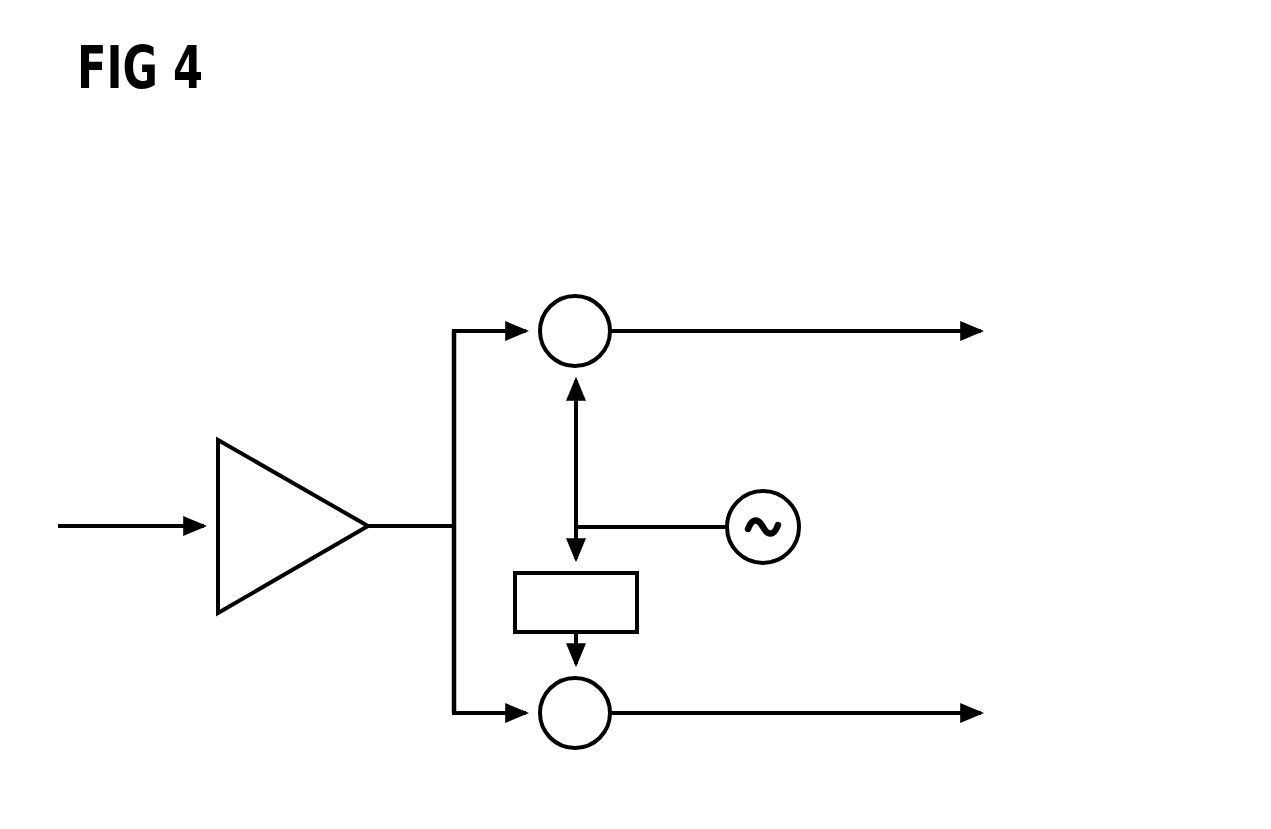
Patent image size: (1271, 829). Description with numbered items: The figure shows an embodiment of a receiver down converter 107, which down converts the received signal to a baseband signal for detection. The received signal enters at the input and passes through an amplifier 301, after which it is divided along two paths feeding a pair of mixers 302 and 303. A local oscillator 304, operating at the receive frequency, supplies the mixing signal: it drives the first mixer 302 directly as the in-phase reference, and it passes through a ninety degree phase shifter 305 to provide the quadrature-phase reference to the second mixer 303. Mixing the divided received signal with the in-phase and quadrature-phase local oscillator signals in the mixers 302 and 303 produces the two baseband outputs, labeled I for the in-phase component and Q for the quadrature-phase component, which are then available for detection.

The receiver down converter 107 is at (652, 433).
The amplifier 301 is at (257, 457).
The mixer 302 is at (573, 295).
The mixer 303 is at (552, 743).
The local oscillator 304 is at (782, 487).
The 90 degree phase shifter 305 is at (637, 607).